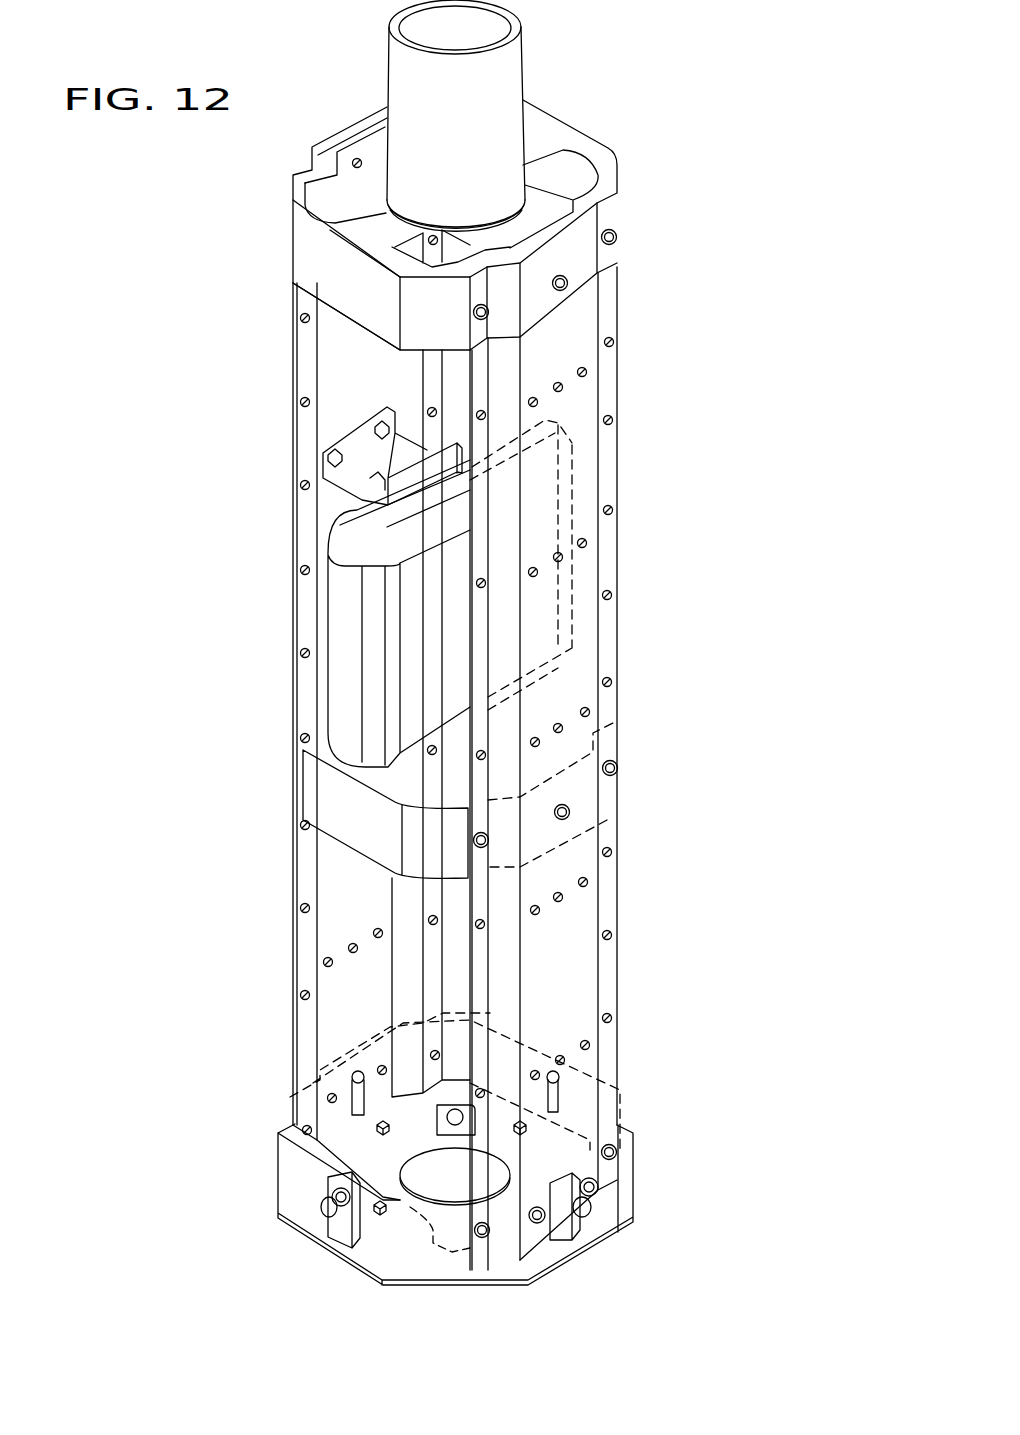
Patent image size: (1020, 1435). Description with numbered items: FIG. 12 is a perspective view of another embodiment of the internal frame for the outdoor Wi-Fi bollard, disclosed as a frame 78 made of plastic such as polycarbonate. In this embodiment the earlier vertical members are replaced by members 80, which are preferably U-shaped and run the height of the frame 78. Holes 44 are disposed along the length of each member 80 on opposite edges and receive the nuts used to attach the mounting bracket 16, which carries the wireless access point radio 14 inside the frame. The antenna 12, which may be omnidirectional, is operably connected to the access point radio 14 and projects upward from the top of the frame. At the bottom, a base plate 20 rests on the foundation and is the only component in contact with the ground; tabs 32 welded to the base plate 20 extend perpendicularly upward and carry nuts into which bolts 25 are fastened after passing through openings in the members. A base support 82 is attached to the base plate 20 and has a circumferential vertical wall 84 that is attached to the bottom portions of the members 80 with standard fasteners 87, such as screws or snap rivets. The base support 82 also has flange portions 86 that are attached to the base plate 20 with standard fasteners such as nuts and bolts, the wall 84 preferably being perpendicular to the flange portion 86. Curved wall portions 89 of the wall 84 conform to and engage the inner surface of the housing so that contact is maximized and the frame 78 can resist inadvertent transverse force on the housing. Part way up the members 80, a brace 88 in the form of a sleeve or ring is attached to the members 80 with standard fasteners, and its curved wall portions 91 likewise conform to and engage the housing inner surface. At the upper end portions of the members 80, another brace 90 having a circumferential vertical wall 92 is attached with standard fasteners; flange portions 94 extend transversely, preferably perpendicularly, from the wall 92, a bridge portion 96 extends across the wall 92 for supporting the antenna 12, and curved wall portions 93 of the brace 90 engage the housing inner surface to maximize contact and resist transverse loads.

The antenna 12 is at (497, 93).
The wireless access point radio 14 is at (333, 622).
The mounting bracket 16 is at (353, 480).
The base plate 20 is at (627, 1177).
The bolts 25 is at (582, 1212).
The tabs 32 is at (543, 1220).
The holes 44 is at (592, 886).
The frame 78 is at (645, 552).
The members 80 is at (342, 893).
The base support 82 is at (353, 1143).
The circumferential vertical wall 84 is at (405, 1252).
The flange portions 86 is at (305, 1180).
The fasteners 87 is at (625, 1175).
The brace 88 is at (338, 798).
The curved wall portions 89 is at (452, 1252).
The brace 90 is at (330, 316).
The curved wall portions 91 is at (407, 855).
The circumferential vertical wall 92 is at (375, 320).
The curved wall portions 93 is at (620, 185).
The flange portions 94 is at (607, 167).
The bridge portion 96 is at (367, 230).